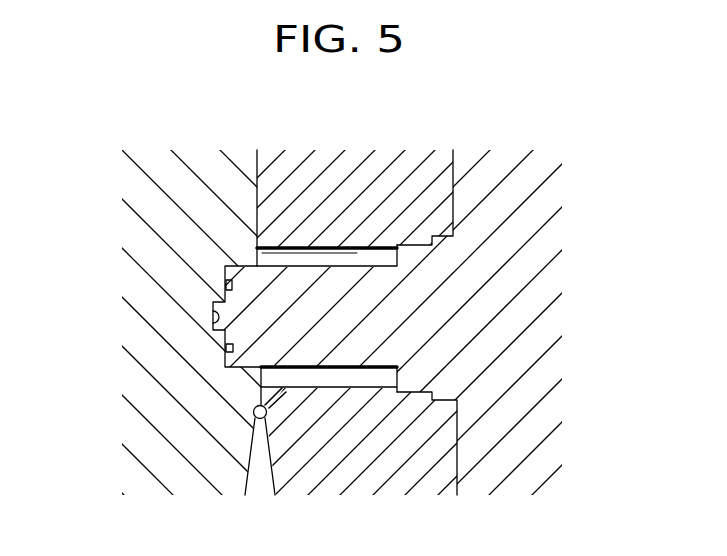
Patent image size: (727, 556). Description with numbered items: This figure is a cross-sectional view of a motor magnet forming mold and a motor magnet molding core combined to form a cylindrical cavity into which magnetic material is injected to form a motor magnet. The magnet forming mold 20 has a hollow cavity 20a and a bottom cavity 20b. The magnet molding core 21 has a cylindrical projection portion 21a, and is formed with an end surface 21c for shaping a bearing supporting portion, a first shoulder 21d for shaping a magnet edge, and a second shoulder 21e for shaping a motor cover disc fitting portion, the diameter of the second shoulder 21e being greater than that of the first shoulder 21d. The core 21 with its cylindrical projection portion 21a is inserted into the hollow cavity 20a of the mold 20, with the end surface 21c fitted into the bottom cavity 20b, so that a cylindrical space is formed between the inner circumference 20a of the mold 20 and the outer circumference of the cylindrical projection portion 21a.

The magnet forming mold 20 is at (383, 151).
The hollow cavity 20a is at (298, 247).
The bottom cavity 20b is at (214, 318).
The magnet molding core 21 is at (455, 301).
The cylindrical projection portion 21a is at (348, 318).
The end surface 21c is at (238, 286).
The first shoulder 21d is at (404, 378).
The second shoulder 21e is at (433, 392).